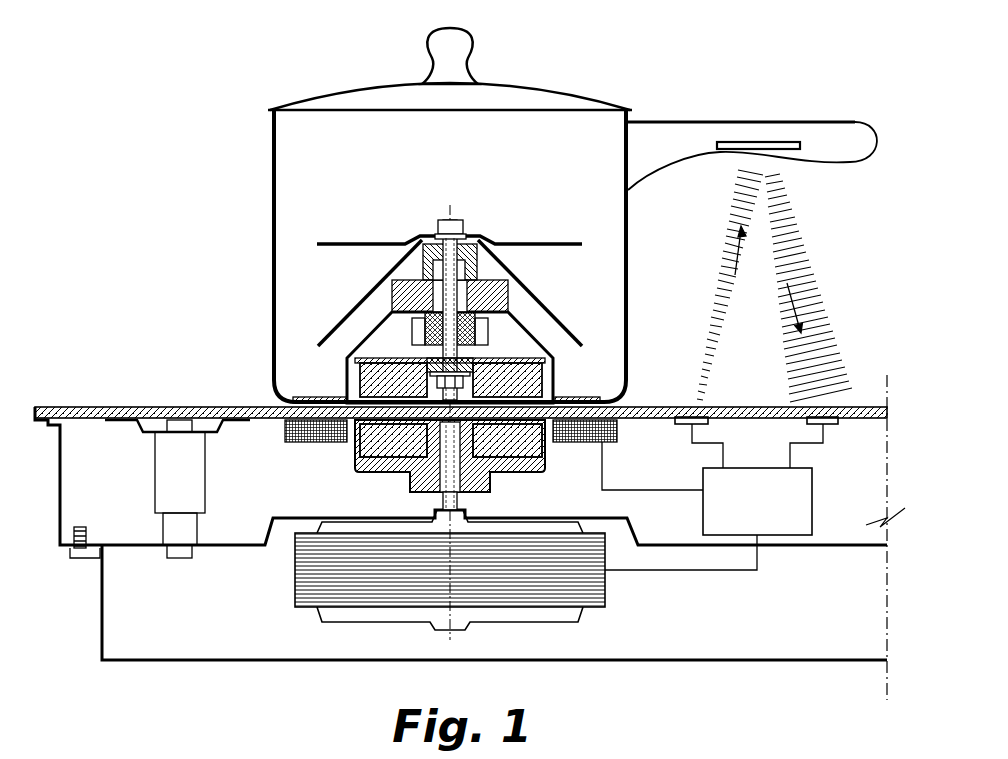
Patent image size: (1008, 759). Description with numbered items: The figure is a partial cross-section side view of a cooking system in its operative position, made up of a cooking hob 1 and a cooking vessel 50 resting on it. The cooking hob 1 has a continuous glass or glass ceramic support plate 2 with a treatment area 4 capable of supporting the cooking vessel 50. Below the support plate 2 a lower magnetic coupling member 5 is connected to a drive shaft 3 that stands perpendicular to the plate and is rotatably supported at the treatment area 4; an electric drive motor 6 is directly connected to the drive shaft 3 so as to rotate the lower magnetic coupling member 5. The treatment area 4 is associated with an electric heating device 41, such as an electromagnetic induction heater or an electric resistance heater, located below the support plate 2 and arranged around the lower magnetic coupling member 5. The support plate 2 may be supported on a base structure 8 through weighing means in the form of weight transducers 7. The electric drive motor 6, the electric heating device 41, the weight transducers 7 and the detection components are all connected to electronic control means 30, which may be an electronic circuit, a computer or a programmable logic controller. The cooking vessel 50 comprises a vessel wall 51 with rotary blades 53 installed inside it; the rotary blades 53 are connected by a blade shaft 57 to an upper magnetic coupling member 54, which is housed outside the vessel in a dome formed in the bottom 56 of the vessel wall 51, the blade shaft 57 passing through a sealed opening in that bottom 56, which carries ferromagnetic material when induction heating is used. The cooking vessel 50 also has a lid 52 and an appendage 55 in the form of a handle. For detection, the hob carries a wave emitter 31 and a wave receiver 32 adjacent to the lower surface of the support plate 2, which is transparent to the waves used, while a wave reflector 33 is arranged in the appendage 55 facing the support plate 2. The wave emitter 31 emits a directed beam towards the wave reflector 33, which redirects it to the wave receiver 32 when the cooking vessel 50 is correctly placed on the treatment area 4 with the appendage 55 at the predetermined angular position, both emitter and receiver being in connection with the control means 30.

The cooking hob 1 is at (106, 350).
The support plate 2 is at (158, 407).
The drive shaft 3 is at (437, 508).
The treatment area 4 is at (264, 388).
The electric heating device 41 is at (318, 442).
The lower magnetic coupling member 5 is at (533, 467).
The electric drive motor 6 is at (298, 583).
The weight transducer 7 is at (188, 533).
The base structure 8 is at (155, 657).
The electronic control means 30 is at (742, 516).
The wave emitter 31 is at (682, 425).
The wave receiver 32 is at (828, 425).
The wave reflector 33 is at (753, 143).
The cooking vessel 50 is at (563, 47).
The vessel wall 51 is at (271, 178).
The lid 52 is at (365, 97).
The rotary blades 53 is at (530, 243).
The upper magnetic coupling member 54 is at (542, 384).
The appendage 55 is at (820, 132).
The bottom 56 is at (316, 388).
The blade shaft 57 is at (440, 345).